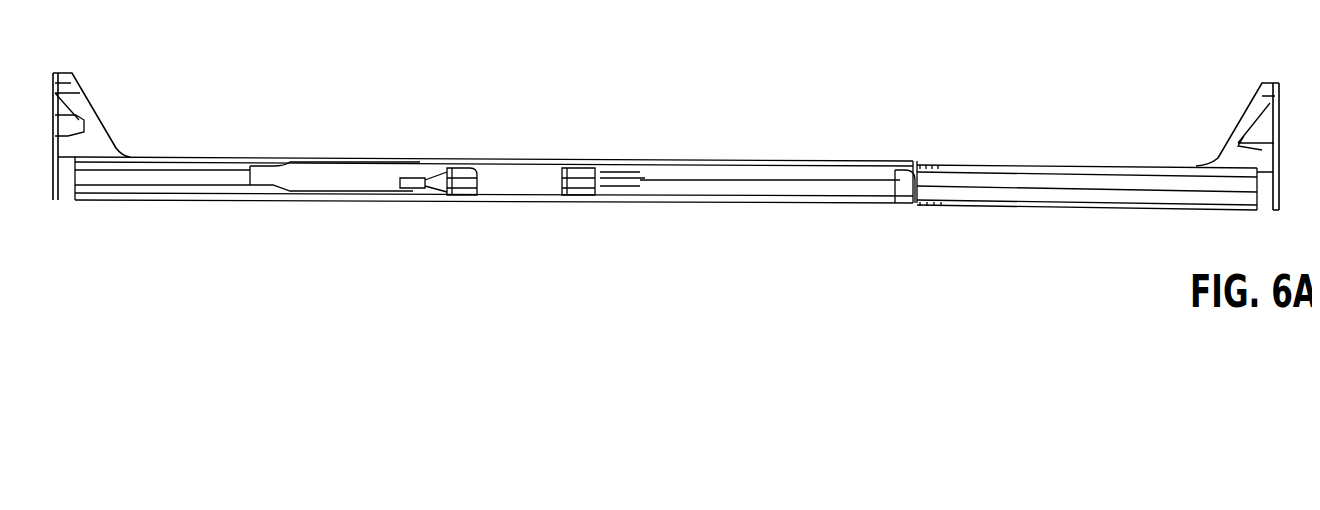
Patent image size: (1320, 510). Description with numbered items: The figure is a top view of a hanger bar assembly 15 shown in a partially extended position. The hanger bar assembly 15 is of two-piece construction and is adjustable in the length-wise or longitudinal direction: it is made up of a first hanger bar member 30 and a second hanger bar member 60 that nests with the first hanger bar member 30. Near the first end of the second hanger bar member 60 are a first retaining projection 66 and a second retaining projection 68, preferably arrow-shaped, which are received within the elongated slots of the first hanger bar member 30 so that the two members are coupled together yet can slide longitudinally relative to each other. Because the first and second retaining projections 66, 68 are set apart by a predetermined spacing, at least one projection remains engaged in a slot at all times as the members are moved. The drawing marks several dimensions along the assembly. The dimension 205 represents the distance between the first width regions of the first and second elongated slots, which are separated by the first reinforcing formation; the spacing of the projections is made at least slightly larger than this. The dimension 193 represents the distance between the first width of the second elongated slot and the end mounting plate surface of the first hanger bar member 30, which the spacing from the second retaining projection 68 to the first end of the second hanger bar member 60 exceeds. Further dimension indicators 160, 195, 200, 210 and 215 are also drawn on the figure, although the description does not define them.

The hanger bar assembly 15 is at (666, 228).
The first hanger bar member 30 is at (176, 147).
The second hanger bar member 60 is at (1123, 213).
The first retaining projection 66 is at (423, 183).
The second retaining projection 68 is at (582, 183).
The height dimension 160 is at (730, 86).
The dimension 193 is at (55, 200).
The second length 195 is at (445, 200).
The offset distance 200 is at (365, 292).
The dimension 205 is at (593, 200).
The fourth length 210 is at (913, 203).
The end offset distance 215 is at (822, 282).